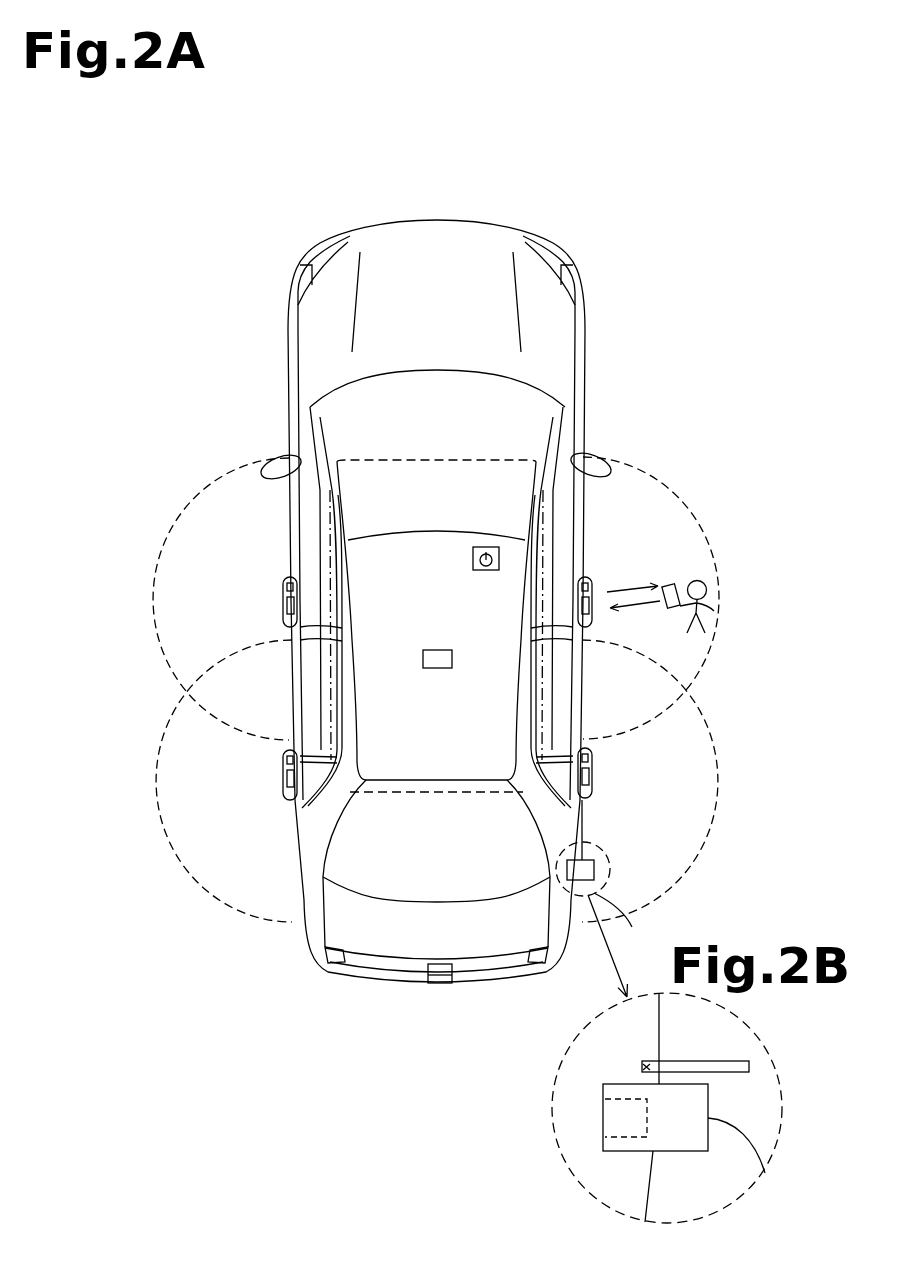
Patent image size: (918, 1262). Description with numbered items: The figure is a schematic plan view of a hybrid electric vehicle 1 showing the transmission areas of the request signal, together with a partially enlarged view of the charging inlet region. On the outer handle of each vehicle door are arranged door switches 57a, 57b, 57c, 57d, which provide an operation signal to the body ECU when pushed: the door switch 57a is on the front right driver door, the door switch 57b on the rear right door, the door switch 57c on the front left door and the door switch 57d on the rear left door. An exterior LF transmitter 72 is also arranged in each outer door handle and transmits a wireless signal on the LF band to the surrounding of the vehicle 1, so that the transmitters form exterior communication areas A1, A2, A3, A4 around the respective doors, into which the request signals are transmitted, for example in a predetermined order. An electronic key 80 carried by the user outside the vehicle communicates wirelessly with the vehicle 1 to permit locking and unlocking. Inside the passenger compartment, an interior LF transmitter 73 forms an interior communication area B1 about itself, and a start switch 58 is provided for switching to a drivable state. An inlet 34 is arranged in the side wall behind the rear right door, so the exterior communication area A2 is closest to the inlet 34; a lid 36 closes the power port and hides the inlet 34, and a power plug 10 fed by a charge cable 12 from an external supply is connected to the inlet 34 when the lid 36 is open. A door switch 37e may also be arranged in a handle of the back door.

In FIG. 2A, the hybrid electric vehicle 1 is at (428, 217).
In FIG. 2A, the interior communication area B1 is at (440, 455).
In FIG. 2A, the exterior communication area A1 is at (630, 459).
In FIG. 2A, the exterior communication area A2 is at (693, 853).
In FIG. 2A, the exterior communication area A3 is at (240, 459).
In FIG. 2A, the exterior communication area A4 is at (201, 880).
In FIG. 2A, the door switch 57a is at (593, 580).
In FIG. 2A, the door switch 57b is at (594, 754).
In FIG. 2A, the door switch 57c is at (289, 578).
In FIG. 2A, the door switch 57d is at (285, 752).
In FIG. 2A, the exterior LF transmitter 72 is at (287, 606).
In FIG. 2A, the start switch 58 is at (473, 558).
In FIG. 2A, the interior LF transmitter 73 is at (452, 660).
In FIG. 2A, the electronic key 80 is at (675, 585).
In FIG. 2A, the power plug 10 is at (594, 840).
In FIG. 2B, the power plug 10 is at (684, 1138).
In FIG. 2A, the charge cable 12 is at (610, 868).
In FIG. 2B, the charge cable 12 is at (740, 1123).
In FIG. 2A, the door switch 37e is at (440, 985).
In FIG. 2B, the lid 36 is at (697, 1062).
In FIG. 2B, the inlet 34 is at (625, 1137).